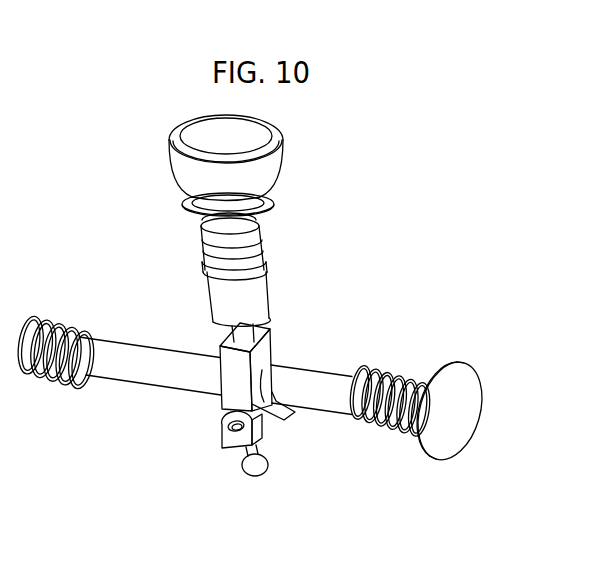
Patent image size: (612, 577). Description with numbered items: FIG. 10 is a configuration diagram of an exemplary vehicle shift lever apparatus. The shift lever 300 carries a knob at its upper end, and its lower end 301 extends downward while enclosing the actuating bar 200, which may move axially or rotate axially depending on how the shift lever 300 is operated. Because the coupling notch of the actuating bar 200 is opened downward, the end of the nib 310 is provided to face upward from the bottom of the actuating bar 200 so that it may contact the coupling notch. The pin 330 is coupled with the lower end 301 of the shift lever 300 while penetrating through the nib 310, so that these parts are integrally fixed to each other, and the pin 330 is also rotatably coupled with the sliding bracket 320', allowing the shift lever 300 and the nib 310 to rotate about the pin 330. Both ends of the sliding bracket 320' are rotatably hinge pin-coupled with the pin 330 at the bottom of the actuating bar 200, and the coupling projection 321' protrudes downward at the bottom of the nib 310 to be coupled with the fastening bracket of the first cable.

The shift lever 300 is at (265, 292).
The lower end 301 is at (232, 367).
The actuating bar 200 is at (310, 381).
The nib 310 is at (287, 413).
The sliding bracket 320' is at (215, 478).
The coupling projection 321' is at (323, 500).
The pin 330 is at (221, 427).